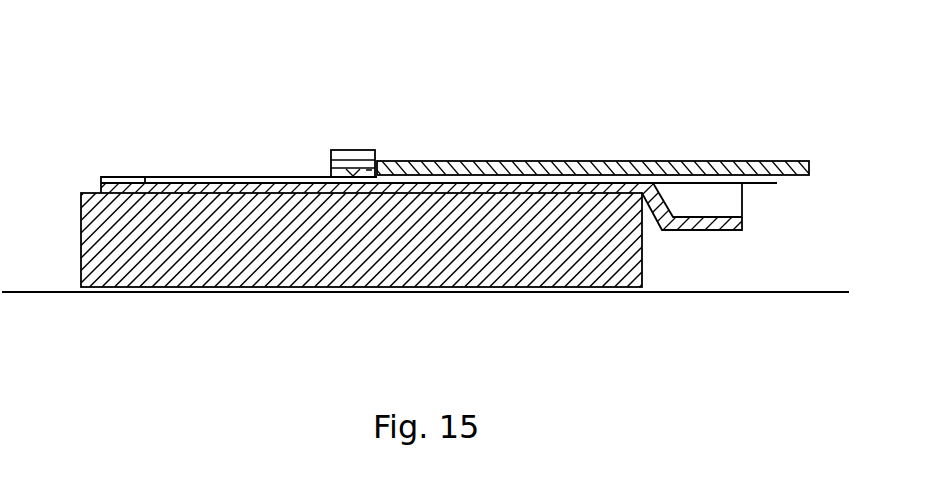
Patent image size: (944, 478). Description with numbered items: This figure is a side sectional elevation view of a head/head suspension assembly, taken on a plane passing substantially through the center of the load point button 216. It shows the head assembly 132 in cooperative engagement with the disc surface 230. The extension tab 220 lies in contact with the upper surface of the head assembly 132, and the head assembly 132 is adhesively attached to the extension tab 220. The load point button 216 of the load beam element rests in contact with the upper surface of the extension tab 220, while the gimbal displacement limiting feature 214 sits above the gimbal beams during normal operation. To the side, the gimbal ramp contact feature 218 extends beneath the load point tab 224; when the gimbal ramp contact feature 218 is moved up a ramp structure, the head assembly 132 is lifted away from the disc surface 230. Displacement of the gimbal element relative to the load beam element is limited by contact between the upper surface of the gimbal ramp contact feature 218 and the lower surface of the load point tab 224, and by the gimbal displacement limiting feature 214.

The head assembly 132 is at (345, 237).
The gimbal displacement limiting feature 214 is at (353, 150).
The load point button 216 is at (357, 172).
The gimbal ramp contact feature 218 is at (698, 230).
The extension tab 220 is at (258, 185).
The load point tab 224 is at (600, 167).
The disc surface 230 is at (138, 293).